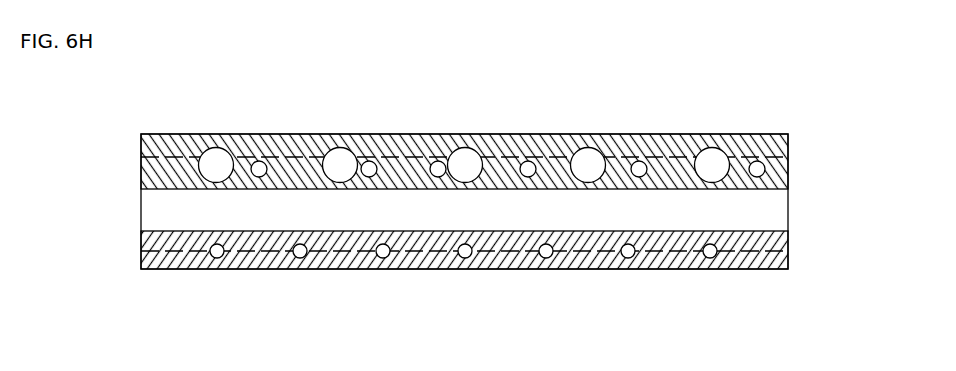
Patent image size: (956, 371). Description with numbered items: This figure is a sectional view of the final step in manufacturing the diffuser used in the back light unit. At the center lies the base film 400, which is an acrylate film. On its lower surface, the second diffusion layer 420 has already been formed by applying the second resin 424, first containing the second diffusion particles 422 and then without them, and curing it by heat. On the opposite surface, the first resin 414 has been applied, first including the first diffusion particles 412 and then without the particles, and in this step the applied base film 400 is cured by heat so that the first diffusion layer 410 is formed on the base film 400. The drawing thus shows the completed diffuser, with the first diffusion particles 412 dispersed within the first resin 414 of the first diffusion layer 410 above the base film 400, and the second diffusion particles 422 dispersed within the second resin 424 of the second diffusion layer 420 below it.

The base film 400 is at (780, 213).
The first diffusion layer 410 is at (126, 163).
The first diffusion particles 412 is at (587, 160).
The first resin 414 is at (788, 178).
The second diffusion layer 420 is at (126, 251).
The second diffusion particles 422 is at (627, 256).
The second resin 424 is at (788, 267).